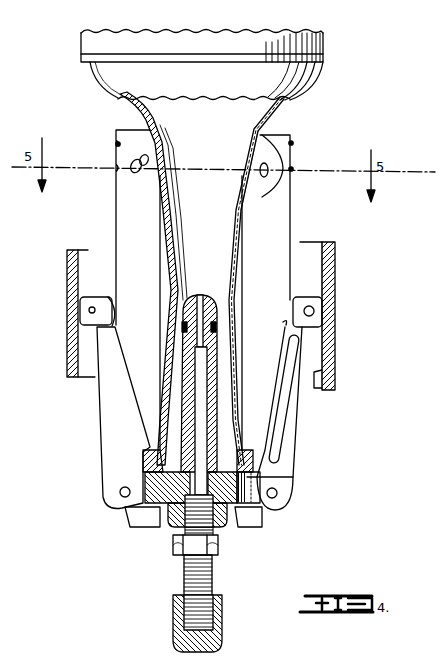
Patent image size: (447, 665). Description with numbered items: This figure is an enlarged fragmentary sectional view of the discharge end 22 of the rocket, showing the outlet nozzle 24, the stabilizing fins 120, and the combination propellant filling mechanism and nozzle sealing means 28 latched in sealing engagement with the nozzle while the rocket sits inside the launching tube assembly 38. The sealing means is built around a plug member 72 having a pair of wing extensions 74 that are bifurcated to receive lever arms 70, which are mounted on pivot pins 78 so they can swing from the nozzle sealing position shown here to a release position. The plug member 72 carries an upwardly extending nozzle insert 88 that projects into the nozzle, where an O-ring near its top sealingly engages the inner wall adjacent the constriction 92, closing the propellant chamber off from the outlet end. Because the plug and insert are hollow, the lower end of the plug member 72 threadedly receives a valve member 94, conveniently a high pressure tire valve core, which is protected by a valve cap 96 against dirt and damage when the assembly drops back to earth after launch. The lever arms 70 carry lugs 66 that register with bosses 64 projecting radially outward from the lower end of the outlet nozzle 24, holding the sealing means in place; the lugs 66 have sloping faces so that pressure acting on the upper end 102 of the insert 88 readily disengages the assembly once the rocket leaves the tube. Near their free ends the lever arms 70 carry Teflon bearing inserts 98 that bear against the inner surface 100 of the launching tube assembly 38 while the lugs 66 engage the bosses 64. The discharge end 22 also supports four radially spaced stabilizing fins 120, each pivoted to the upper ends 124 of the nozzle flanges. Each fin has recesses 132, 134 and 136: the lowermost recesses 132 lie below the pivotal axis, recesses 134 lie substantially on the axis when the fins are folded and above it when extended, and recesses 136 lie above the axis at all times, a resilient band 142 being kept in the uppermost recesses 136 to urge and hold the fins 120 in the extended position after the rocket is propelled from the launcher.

The discharge end 22 is at (86, 112).
The outlet nozzle 24 is at (221, 218).
The combination propellant filling mechanism and nozzle sealing means 28 is at (170, 538).
The launching tube assembly 38 is at (336, 322).
The bosses 64 is at (143, 462).
The lugs 66 is at (155, 432).
The lever arms 70 is at (103, 412).
The plug member 72 is at (227, 545).
The wing extensions 74 is at (128, 506).
The pivot pins 78 is at (122, 493).
The nozzle insert 88 is at (188, 397).
The constriction 92 is at (217, 327).
The valve member 94 is at (183, 590).
The valve cap 96 is at (178, 638).
The Teflon bearing inserts 98 is at (80, 303).
The inner surface 100 is at (318, 389).
The upper end 102 is at (200, 294).
The stabilizing fins 120 is at (115, 232).
The upper ends of flanges 124 is at (253, 190).
The recesses 132 is at (115, 300).
The recesses 134 is at (292, 169).
The recesses 136 is at (292, 142).
The resilient band 142 is at (118, 144).